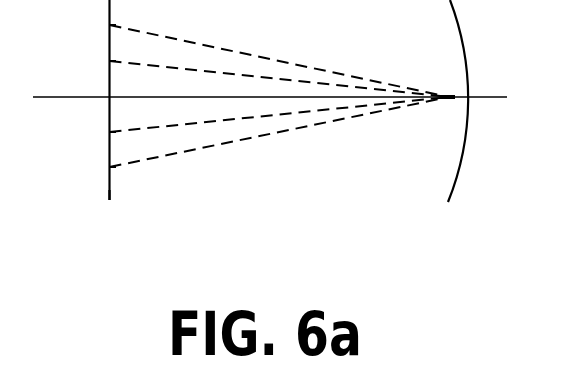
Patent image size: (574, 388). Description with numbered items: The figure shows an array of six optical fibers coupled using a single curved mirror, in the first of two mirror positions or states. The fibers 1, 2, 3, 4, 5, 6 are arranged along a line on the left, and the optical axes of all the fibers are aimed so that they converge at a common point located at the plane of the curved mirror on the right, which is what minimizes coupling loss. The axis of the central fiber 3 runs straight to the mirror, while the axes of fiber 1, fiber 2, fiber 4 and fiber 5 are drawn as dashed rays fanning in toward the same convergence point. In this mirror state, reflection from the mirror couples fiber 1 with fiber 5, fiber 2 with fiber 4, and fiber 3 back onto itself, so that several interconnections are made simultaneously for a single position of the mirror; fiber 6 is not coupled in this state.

The fiber 1 is at (266, 53).
The fiber 2 is at (266, 71).
The fiber 3 is at (241, 97).
The fiber 4 is at (266, 121).
The fiber 5 is at (266, 139).
The fiber 6 is at (96, 198).